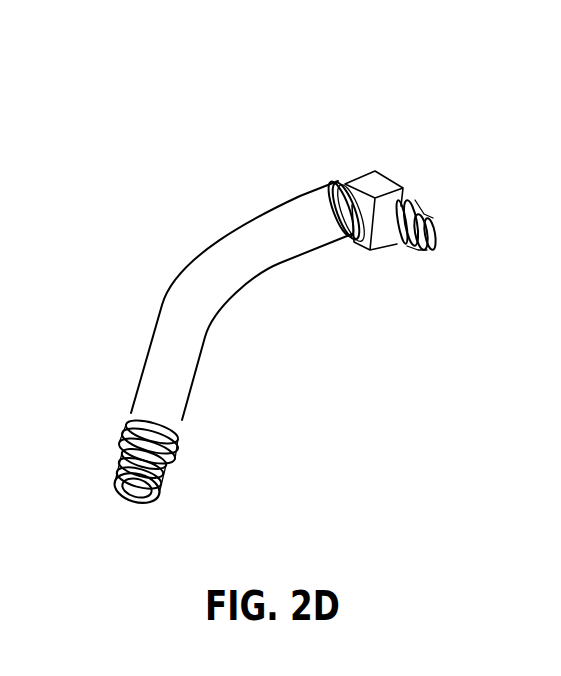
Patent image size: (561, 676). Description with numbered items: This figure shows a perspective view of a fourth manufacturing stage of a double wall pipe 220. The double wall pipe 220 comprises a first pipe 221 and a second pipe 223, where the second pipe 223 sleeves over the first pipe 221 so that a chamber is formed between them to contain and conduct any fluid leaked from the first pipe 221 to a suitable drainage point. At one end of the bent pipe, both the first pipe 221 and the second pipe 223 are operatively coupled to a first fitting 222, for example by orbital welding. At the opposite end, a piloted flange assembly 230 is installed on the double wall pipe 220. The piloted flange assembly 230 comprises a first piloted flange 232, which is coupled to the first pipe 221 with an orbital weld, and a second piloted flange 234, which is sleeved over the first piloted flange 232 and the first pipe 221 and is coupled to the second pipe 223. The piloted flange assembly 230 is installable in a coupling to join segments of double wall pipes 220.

The double wall pipe 220 is at (196, 158).
The first pipe 221 is at (112, 458).
The first fitting 222 is at (387, 178).
The second pipe 223 is at (203, 353).
The piloted flange assembly 230 is at (89, 507).
The first piloted flange 232 is at (150, 498).
The second piloted flange 234 is at (170, 477).